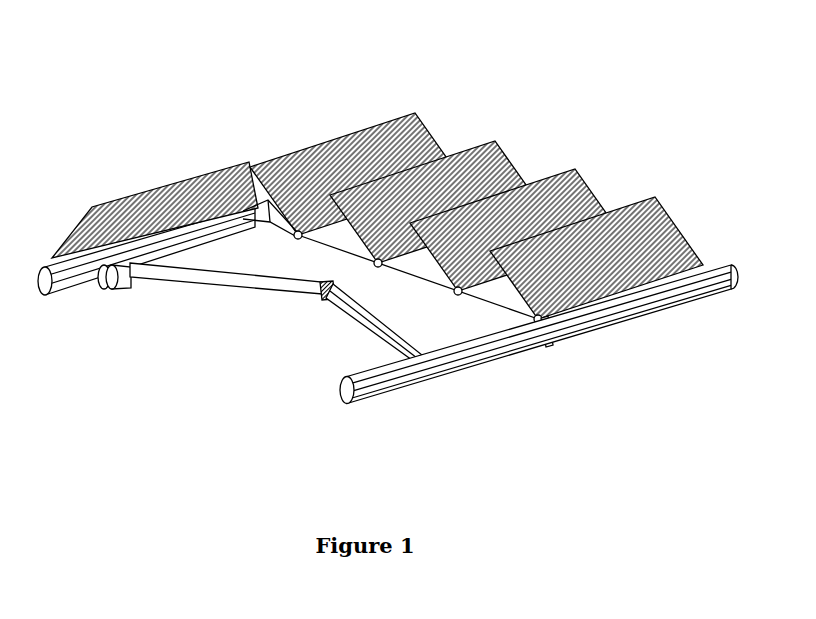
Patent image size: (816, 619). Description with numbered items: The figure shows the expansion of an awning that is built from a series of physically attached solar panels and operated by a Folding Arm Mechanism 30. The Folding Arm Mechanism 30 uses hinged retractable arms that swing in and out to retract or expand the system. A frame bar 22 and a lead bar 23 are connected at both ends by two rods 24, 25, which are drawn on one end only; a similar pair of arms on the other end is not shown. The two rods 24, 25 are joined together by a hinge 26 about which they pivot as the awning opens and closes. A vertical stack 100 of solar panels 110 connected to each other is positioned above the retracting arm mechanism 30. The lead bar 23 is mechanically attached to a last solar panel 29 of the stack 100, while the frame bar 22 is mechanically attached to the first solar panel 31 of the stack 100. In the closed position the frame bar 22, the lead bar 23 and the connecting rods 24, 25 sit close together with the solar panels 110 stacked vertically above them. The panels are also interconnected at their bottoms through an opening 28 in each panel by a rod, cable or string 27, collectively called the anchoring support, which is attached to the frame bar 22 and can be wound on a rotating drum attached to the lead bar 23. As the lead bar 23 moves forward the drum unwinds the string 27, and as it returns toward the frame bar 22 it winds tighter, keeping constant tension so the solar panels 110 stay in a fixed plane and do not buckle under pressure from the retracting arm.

The vertical stack 100 is at (238, 72).
The Folding Arm Mechanism 30 is at (575, 121).
The solar panels 110 is at (503, 153).
The last solar panel 29 is at (673, 237).
The first solar panel 31 is at (197, 197).
The frame bar 22 is at (45, 290).
The lead bar 23 is at (343, 399).
The rod 24 is at (229, 287).
The rod 25 is at (372, 333).
The hinge 26 is at (320, 298).
The string 27 is at (328, 245).
The opening 28 is at (296, 234).